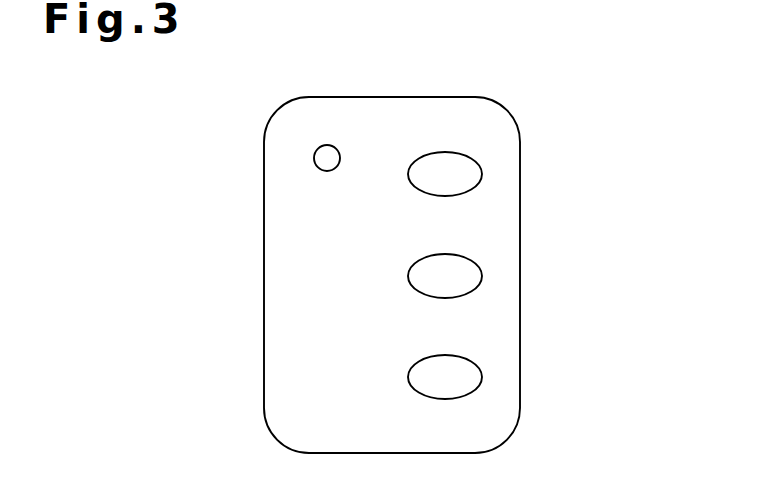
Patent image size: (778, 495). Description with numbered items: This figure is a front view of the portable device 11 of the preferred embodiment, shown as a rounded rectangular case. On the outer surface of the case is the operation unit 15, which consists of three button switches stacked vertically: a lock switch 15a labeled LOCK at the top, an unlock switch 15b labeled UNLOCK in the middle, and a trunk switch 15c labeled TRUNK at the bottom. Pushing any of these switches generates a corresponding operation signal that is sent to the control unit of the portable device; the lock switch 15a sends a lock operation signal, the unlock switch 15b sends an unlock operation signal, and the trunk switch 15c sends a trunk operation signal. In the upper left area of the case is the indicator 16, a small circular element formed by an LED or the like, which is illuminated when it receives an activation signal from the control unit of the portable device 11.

The portable device 11 is at (283, 310).
The operation unit 15 is at (530, 262).
The lock switch 15a is at (462, 173).
The unlock switch 15b is at (462, 277).
The trunk switch 15c is at (501, 355).
The indicator 16 is at (328, 161).